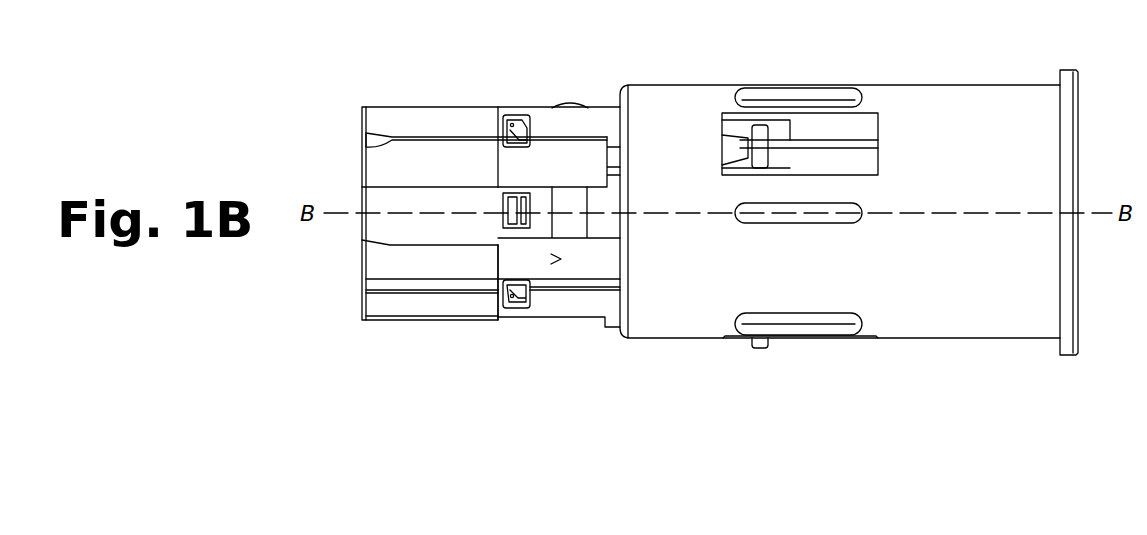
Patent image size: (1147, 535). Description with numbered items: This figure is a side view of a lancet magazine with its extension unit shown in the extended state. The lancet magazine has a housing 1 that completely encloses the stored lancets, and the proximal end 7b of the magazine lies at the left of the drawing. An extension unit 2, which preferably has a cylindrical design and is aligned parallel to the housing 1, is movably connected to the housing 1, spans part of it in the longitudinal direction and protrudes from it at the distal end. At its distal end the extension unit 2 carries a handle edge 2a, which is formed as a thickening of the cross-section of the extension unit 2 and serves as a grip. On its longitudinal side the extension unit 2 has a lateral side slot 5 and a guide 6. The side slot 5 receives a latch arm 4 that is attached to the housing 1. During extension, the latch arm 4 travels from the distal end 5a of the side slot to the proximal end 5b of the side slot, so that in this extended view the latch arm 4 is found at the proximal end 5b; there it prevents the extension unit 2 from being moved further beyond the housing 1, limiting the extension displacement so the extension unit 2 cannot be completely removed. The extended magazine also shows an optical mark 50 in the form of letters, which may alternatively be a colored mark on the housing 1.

The housing 1 is at (452, 305).
The extension unit 2 is at (985, 308).
The handle edge 2a is at (1067, 355).
The latch arm 4 is at (760, 125).
The side slot 5 is at (878, 340).
The distal end of side slot 5a is at (875, 110).
The proximal end of side slot 5b is at (724, 127).
The guide 6 is at (820, 318).
The proximal end of lancet magazine 7b is at (362, 143).
The optical mark 50 is at (596, 273).